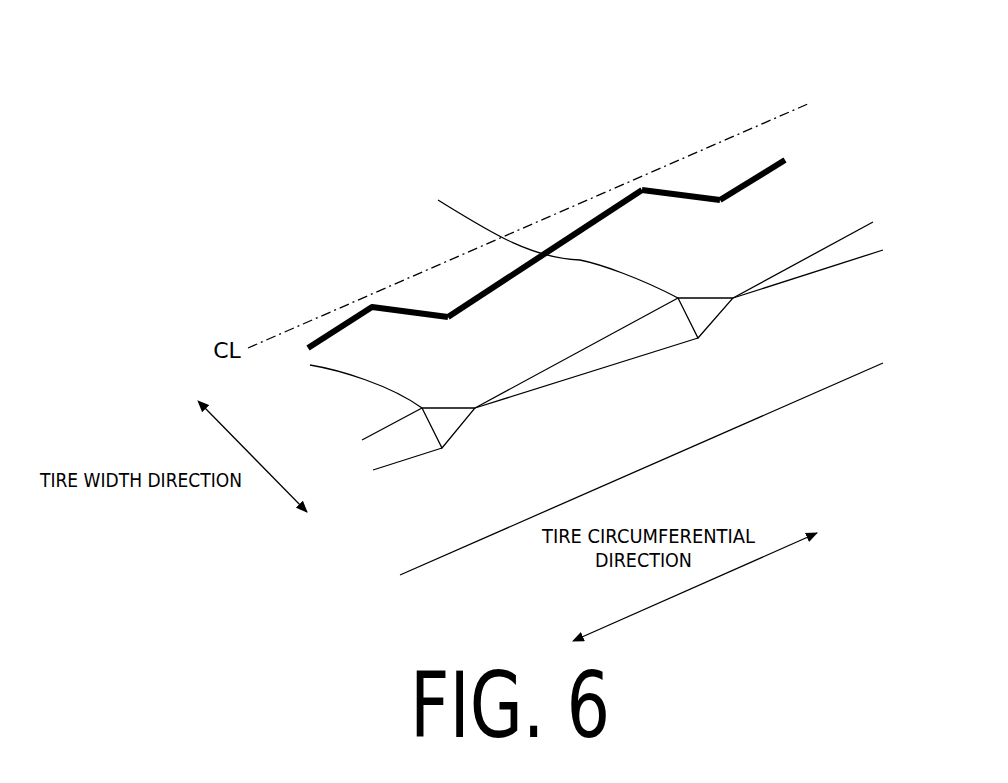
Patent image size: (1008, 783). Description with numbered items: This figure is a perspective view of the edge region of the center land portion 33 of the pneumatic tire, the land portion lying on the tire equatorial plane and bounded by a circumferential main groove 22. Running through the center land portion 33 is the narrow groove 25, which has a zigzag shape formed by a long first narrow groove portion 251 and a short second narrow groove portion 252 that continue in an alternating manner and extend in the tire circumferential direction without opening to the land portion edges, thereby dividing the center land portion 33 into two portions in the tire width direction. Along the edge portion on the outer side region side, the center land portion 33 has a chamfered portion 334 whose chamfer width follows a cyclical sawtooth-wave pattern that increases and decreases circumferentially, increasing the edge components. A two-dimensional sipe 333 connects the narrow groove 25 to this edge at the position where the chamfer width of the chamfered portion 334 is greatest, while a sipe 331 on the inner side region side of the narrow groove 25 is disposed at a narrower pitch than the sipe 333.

The circumferential main groove 22 is at (830, 427).
The narrow groove 25 is at (546, 202).
The first narrow groove portion 251 is at (605, 207).
The second narrow groove portion 252 is at (681, 154).
The center land portion 33 is at (810, 188).
The sipe 331 is at (460, 212).
The two-dimensional sipe 333 is at (635, 272).
The chamfered portion 334 is at (648, 342).